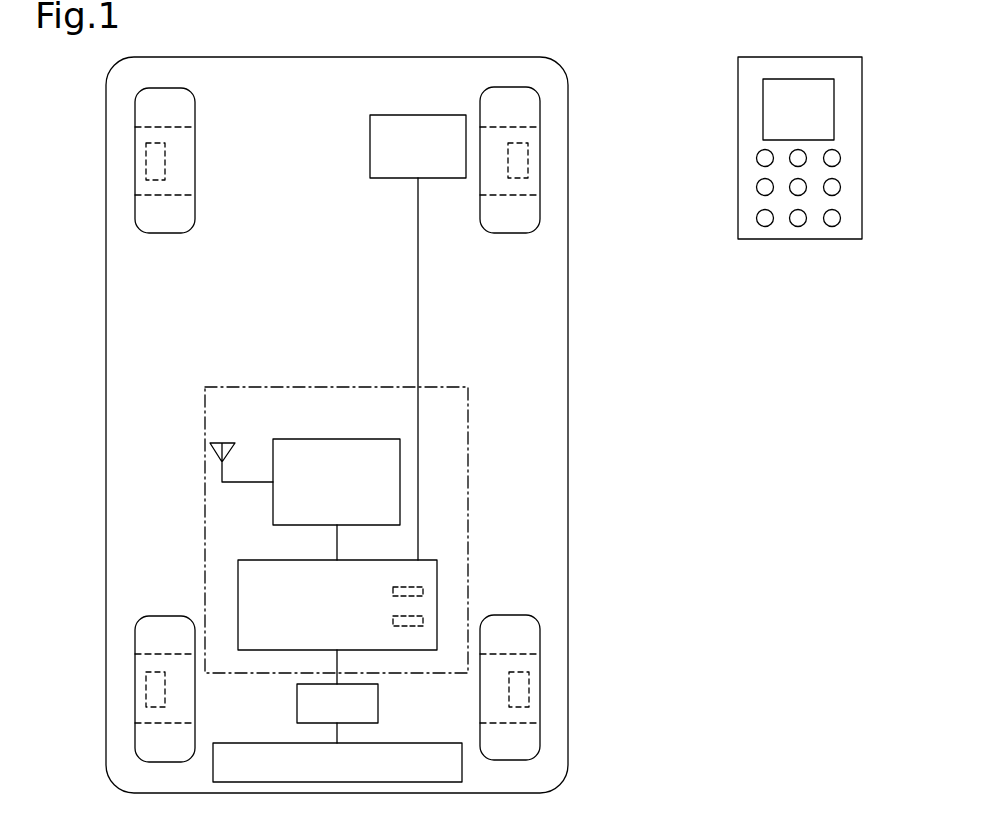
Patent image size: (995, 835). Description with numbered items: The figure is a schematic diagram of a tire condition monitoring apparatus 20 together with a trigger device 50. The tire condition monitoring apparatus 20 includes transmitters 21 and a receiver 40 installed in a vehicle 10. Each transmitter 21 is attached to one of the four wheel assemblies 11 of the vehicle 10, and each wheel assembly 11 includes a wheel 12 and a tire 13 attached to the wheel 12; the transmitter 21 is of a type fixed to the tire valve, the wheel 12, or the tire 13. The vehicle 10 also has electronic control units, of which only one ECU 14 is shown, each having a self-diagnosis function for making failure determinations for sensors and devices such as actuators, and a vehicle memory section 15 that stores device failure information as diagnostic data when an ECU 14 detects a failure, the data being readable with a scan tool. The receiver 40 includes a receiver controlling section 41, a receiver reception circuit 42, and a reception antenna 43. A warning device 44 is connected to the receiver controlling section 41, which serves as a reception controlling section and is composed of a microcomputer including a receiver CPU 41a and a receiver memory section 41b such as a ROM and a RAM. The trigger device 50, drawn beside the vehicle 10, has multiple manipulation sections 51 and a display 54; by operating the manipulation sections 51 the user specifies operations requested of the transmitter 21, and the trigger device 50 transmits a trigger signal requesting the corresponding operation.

The vehicle 10 is at (565, 63).
The wheel assembly 11 is at (339, 434).
The wheel 12 is at (147, 198).
The tire 13 is at (155, 236).
The electronic control unit 14 is at (297, 703).
The vehicle memory section 15 is at (412, 743).
The tire condition monitoring apparatus 20 is at (292, 504).
The transmitter 21 is at (146, 160).
The receiver 40 is at (205, 540).
The receiver controlling section 41 is at (345, 612).
The receiver CPU 41a is at (420, 587).
The receiver memory section 41b is at (405, 627).
The receiver reception circuit 42 is at (302, 439).
The reception antenna 43 is at (227, 443).
The warning device 44 is at (418, 115).
The trigger device 50 is at (792, 180).
The manipulation section 51 is at (765, 218).
The display 54 is at (770, 110).